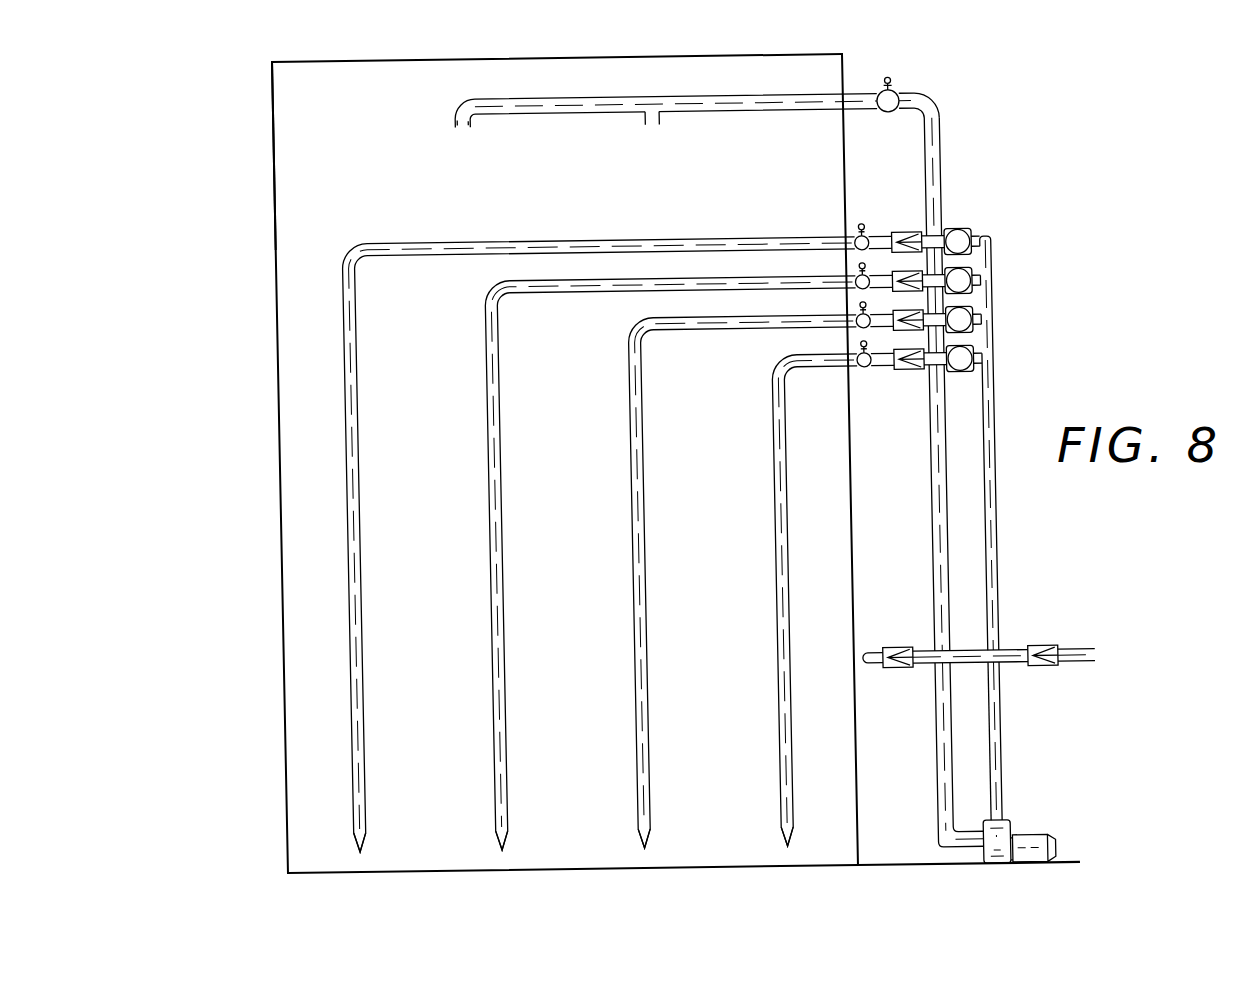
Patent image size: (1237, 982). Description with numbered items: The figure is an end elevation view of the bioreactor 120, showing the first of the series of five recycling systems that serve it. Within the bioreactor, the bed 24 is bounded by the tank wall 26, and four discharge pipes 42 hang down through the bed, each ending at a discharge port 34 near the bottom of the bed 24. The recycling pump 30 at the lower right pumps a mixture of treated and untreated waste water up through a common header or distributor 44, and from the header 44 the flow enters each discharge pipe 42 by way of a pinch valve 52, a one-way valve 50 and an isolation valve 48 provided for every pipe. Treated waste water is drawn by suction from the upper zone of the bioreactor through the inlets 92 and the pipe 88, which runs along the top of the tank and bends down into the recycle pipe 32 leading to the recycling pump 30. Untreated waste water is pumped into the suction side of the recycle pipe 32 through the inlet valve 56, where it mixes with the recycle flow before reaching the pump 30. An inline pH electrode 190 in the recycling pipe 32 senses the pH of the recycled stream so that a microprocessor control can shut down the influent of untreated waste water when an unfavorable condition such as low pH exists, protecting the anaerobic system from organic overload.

The bioreactor 120 is at (252, 588).
The bed 24 is at (274, 747).
The tank wall 26 is at (281, 160).
The pipe 88 is at (699, 106).
The inlets 92 is at (469, 133).
The discharge pipe 42 is at (411, 264).
The discharge port 34 is at (346, 852).
The isolation valve 48 is at (859, 236).
The one-way valve 50 is at (902, 241).
The pinch valve 52 is at (959, 238).
The recycle pipe 32 is at (921, 521).
The common header or distributor 44 is at (990, 310).
The inline pH electrode 190 is at (915, 619).
The inlet valve 56 is at (1031, 679).
The recycling pump 30 is at (1005, 845).